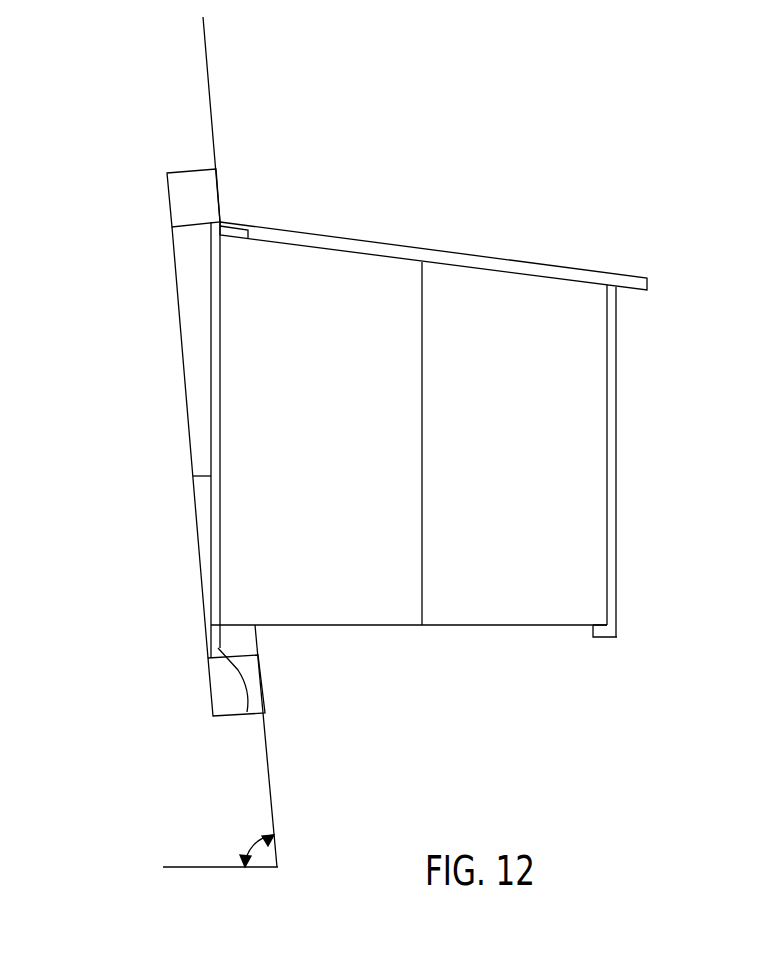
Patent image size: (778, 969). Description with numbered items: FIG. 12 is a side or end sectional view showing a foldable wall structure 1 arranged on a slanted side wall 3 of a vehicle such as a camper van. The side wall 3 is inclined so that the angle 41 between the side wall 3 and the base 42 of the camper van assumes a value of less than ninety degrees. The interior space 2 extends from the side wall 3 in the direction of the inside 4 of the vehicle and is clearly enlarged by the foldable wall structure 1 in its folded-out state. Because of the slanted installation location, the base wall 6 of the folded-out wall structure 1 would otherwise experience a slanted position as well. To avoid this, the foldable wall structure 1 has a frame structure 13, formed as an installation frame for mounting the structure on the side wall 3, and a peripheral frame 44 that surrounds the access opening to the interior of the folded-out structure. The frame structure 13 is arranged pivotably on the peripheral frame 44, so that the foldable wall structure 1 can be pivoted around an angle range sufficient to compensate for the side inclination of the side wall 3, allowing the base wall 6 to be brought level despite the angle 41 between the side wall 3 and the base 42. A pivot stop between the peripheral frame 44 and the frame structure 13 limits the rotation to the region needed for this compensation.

The foldable wall structure 1 is at (359, 442).
The interior space 2 is at (146, 537).
The side wall 3 is at (207, 60).
The inside 4 is at (86, 432).
The base wall 6 is at (472, 627).
The frame structure 13 is at (242, 715).
The angle 41 is at (262, 842).
The base 42 is at (203, 868).
The peripheral frame 44 is at (212, 686).